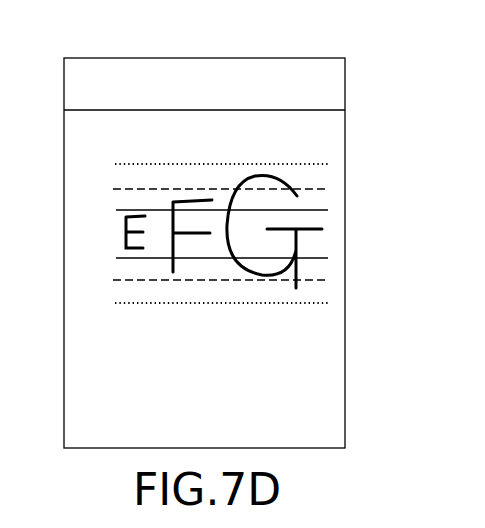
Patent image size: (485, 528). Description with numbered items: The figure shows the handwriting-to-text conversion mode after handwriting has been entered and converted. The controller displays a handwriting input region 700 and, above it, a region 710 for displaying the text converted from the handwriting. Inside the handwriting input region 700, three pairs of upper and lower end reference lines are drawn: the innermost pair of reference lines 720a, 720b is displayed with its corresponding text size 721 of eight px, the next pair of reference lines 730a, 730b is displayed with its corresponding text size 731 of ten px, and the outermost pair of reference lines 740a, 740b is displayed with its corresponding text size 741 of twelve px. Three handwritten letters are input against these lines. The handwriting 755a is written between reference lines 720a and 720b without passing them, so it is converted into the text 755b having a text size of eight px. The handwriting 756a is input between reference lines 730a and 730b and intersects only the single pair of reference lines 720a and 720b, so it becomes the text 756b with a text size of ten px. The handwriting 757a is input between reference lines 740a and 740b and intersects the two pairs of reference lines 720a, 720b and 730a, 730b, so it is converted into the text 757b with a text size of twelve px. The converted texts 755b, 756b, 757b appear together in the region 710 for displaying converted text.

The handwriting input region 700 is at (337, 343).
The region for displaying a text converted from a handwriting 710 is at (335, 88).
The text converted from handwriting 755a 755b is at (83, 72).
The text converted from handwriting 756a 756b is at (112, 70).
The text converted from handwriting 757a 757b is at (150, 70).
The text size 741 is at (73, 164).
The text size 731 is at (73, 189).
The text size 721 is at (73, 210).
The upper end reference line 740a is at (320, 167).
The upper end reference line 730a is at (320, 188).
The upper end reference line 720a is at (320, 210).
The lower end reference line 720b is at (320, 258).
The lower end reference line 730b is at (320, 280).
The lower end reference line 740b is at (320, 303).
The handwriting 755a is at (135, 250).
The handwriting 756a is at (190, 236).
The handwriting 757a is at (238, 272).